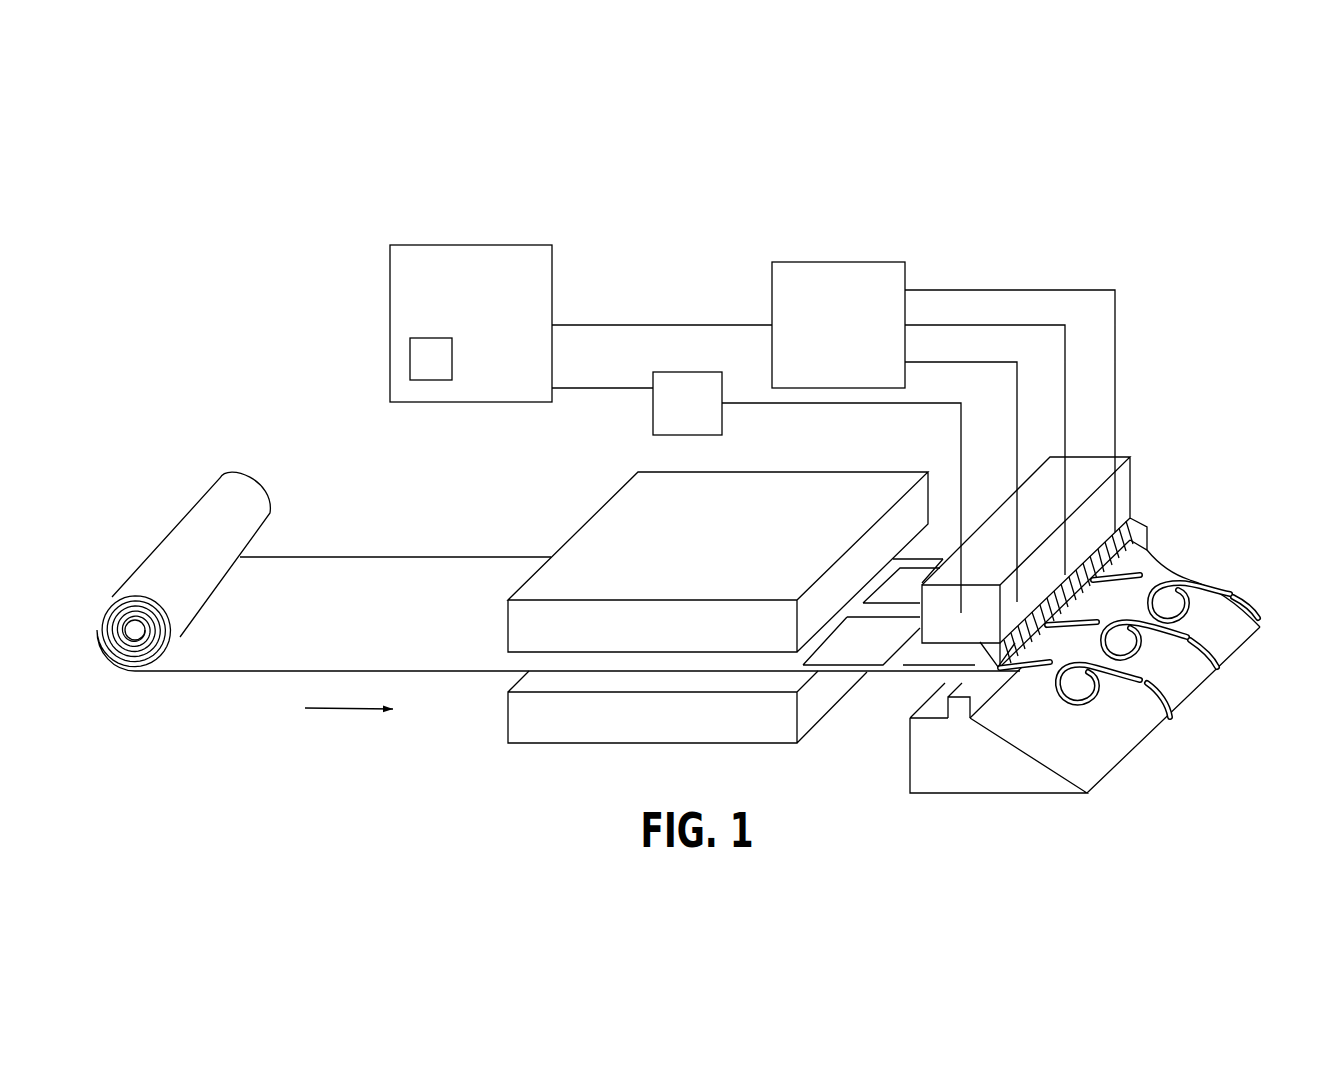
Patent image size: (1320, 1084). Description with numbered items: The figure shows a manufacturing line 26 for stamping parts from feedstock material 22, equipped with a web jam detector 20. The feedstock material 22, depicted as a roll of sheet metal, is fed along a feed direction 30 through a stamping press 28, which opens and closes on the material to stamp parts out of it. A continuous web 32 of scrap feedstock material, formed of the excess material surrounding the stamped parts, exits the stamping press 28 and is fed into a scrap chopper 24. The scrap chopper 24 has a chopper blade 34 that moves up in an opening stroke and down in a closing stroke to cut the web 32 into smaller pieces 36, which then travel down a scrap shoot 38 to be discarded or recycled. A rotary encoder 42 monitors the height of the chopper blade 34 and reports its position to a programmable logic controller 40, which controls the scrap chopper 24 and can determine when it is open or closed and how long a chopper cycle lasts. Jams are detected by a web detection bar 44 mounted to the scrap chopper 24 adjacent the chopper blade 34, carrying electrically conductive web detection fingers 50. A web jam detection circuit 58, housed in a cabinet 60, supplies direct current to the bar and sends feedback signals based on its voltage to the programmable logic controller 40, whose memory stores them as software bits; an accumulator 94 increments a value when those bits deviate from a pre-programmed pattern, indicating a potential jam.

The web jam detector 20 is at (1162, 221).
The feedstock material 22 is at (395, 578).
The scrap chopper 24 is at (896, 689).
The manufacturing line 26 is at (514, 770).
The stamping press 28 is at (630, 548).
The feed direction 30 is at (355, 711).
The web 32 is at (846, 668).
The chopper blade 34 is at (1000, 640).
The smaller pieces 36 is at (1256, 613).
The scrap shoot 38 is at (1085, 763).
The programmable logic controller 40 is at (457, 338).
The rotary encoder 42 is at (674, 416).
The web detection bar 44 is at (1150, 502).
The web detection fingers 50 is at (1155, 550).
The web jam detection circuit 58 is at (825, 340).
The cabinet 60 is at (839, 259).
The accumulator 94 is at (418, 372).